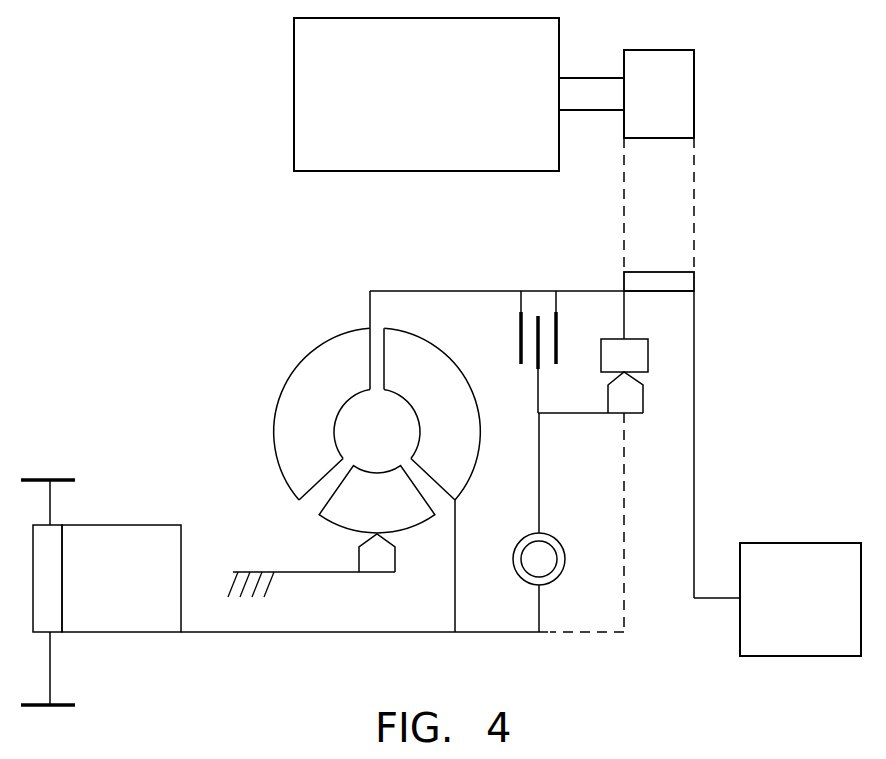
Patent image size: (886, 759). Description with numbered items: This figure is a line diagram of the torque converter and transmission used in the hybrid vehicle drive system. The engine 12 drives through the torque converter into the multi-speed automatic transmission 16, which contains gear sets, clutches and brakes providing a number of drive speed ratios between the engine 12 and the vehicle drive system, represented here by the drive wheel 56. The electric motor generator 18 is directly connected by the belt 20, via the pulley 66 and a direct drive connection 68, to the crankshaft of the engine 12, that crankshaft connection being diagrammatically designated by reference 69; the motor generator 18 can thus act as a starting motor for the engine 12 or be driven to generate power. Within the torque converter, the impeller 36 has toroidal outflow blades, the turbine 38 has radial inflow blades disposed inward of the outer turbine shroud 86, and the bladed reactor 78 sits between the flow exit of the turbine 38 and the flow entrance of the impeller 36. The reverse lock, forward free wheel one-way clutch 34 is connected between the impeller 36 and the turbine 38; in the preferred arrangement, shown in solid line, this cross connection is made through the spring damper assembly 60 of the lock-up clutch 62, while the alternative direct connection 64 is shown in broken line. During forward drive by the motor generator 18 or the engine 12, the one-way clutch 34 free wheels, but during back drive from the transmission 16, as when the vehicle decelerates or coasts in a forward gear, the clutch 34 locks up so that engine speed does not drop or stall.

The gas engine 12 is at (782, 613).
The multi-speed automatic transmission 16 is at (104, 589).
The motor generator 18 is at (410, 102).
The direct belt drive 20 is at (688, 194).
The reverse lock, forward free wheel one-way clutch 34 is at (643, 358).
The impeller 36 is at (306, 371).
The turbine 38 is at (436, 353).
The drive wheel 56 is at (62, 480).
The spring damper assembly 60 is at (557, 537).
The lock-up clutch 62 is at (521, 326).
The alternative direct connection 64 is at (626, 525).
The pulley 66 is at (688, 102).
The direct drive connection 68 is at (689, 282).
The crankshaft connection 69 is at (695, 503).
The bladed reactor 78 is at (345, 539).
The outer turbine shroud 86 is at (377, 424).